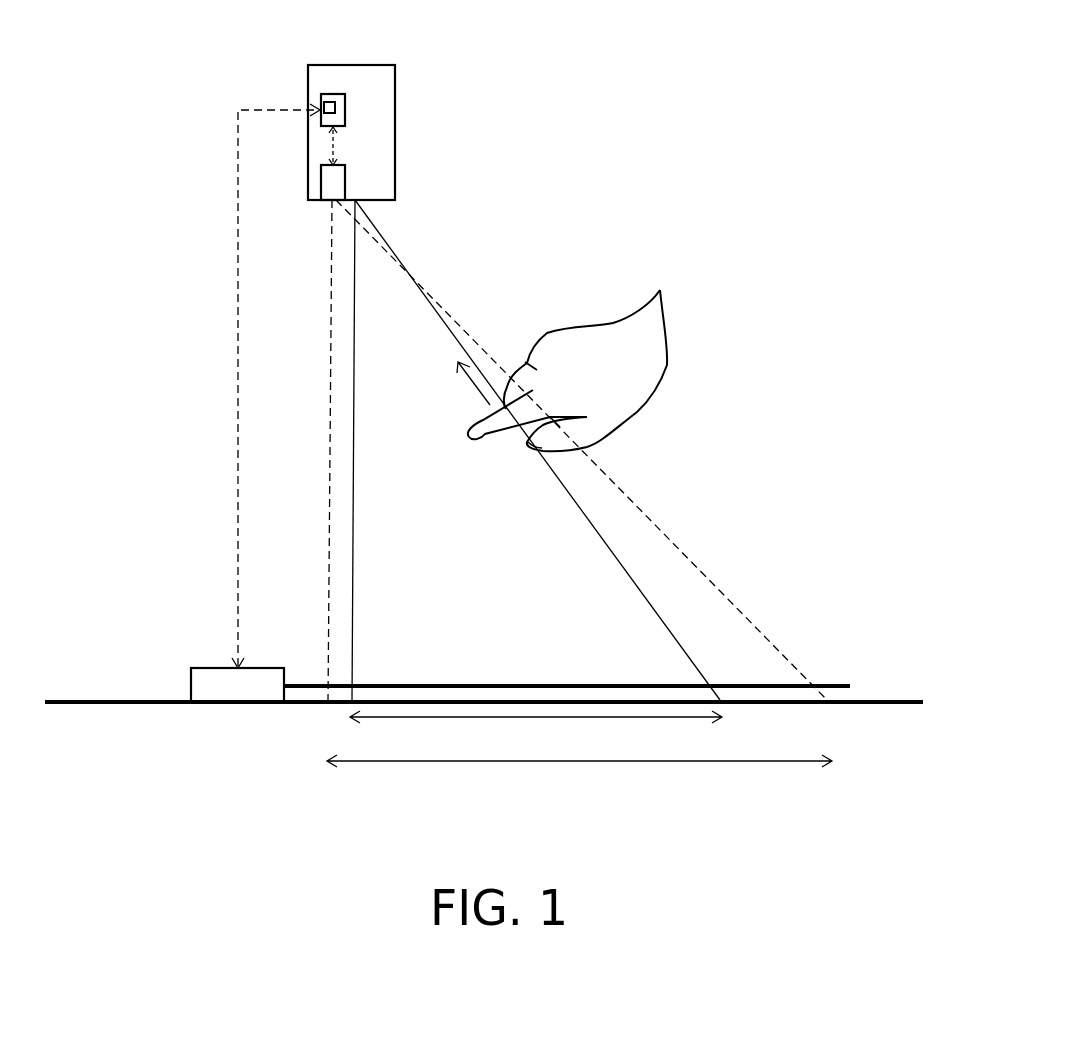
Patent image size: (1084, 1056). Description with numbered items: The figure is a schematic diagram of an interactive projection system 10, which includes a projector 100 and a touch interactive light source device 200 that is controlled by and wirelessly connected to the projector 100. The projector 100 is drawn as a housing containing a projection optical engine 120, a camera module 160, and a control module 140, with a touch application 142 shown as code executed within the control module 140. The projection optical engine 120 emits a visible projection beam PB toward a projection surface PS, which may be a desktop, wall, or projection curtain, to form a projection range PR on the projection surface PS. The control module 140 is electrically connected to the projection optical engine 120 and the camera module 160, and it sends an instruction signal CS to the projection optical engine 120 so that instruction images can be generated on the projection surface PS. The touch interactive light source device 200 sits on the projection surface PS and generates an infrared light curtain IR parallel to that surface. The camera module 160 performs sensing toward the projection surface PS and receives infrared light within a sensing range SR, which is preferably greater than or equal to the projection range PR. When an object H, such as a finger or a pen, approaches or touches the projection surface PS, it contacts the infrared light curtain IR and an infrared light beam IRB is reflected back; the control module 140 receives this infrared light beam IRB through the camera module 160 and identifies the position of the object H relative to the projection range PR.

The interactive projection system 10 is at (928, 830).
The projector 100 is at (457, 103).
The projection optical engine 120 is at (397, 123).
The control module 140 is at (348, 100).
The touch application 142 is at (330, 100).
The camera module 160 is at (345, 183).
The touch interactive light source device 200 is at (213, 677).
The instruction signal CS is at (261, 386).
The projection beam PB is at (385, 240).
The object H is at (602, 343).
The infrared light beam IRB is at (463, 388).
The infrared light curtain IR is at (567, 682).
The projection surface PS is at (881, 689).
The projection range PR is at (536, 733).
The sensing range SR is at (579, 777).